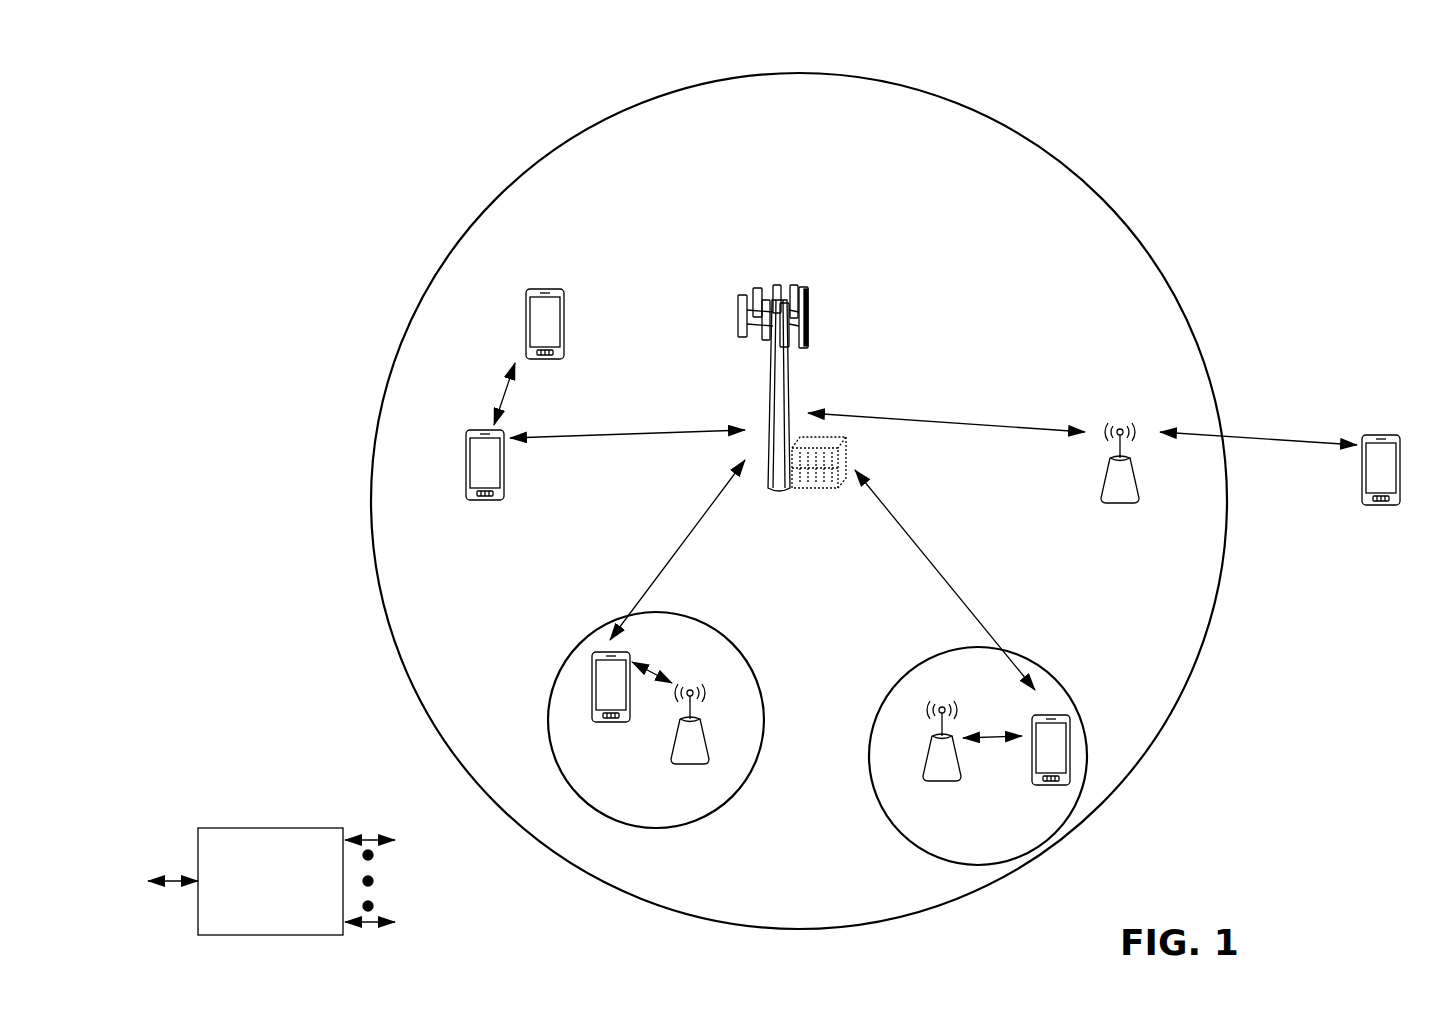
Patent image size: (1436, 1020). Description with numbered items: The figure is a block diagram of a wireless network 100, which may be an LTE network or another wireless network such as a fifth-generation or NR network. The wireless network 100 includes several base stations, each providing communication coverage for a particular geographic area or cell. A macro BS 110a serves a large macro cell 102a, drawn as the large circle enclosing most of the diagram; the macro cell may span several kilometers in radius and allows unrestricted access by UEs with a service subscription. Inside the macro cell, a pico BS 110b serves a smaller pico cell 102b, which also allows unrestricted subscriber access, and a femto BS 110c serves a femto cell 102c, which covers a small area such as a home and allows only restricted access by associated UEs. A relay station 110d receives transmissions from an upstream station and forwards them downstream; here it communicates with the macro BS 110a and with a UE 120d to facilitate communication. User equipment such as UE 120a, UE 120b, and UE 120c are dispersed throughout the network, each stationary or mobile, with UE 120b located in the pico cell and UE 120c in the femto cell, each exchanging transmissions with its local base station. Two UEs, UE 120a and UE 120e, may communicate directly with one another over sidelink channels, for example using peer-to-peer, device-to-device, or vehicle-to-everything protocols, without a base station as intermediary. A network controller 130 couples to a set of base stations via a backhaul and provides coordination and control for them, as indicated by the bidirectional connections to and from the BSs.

The wireless network 100 is at (255, 68).
The macro cell 102a is at (1085, 177).
The pico cell 102b is at (746, 651).
The femto cell 102c is at (911, 660).
The macro BS 110a is at (783, 281).
The pico BS 110b is at (708, 756).
The femto BS 110c is at (924, 768).
The relay station 110d is at (1123, 424).
The UE 120a is at (466, 462).
The UE 120b is at (598, 722).
The UE 120c is at (1045, 784).
The UE 120d is at (1394, 436).
The UE 120e is at (523, 312).
The network controller 130 is at (268, 827).